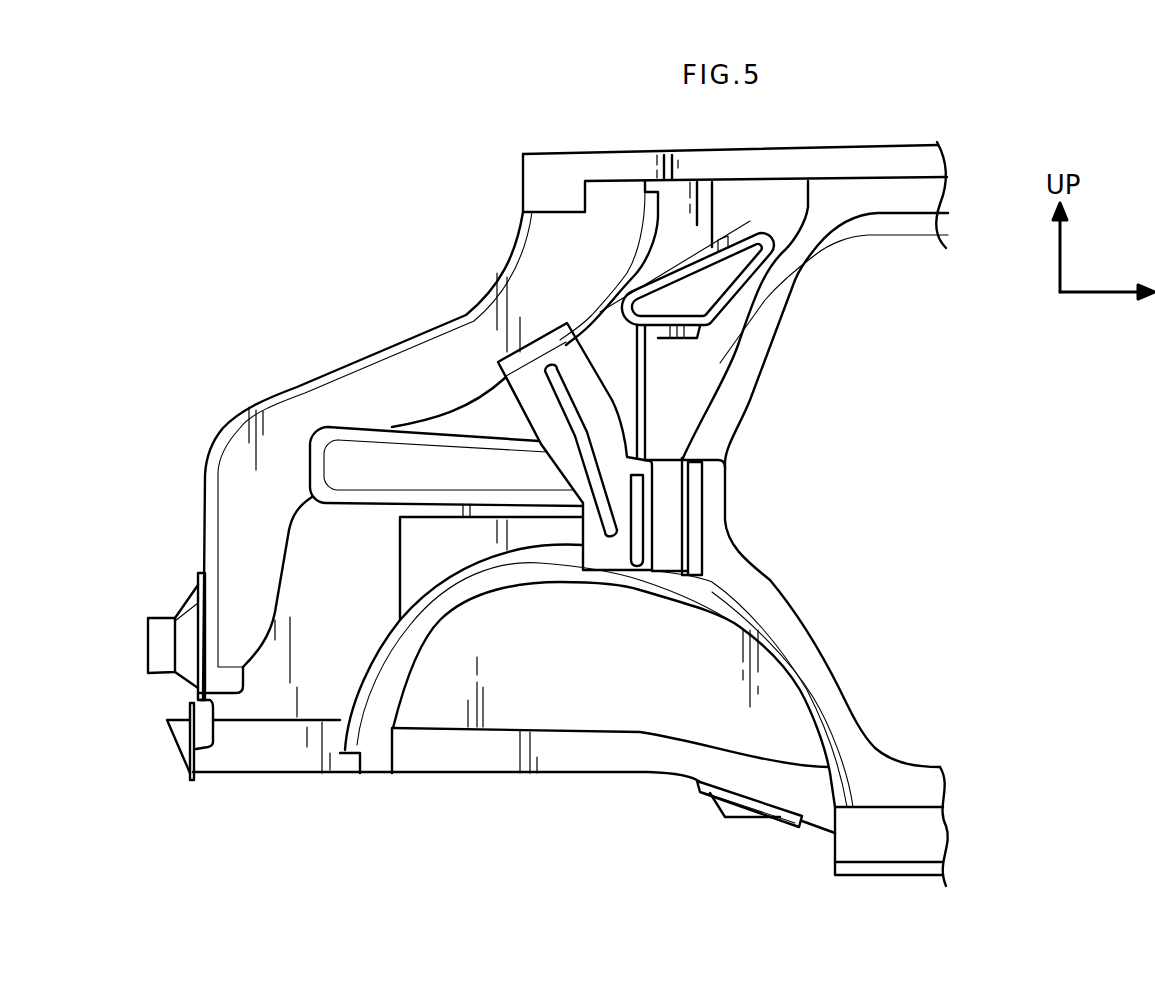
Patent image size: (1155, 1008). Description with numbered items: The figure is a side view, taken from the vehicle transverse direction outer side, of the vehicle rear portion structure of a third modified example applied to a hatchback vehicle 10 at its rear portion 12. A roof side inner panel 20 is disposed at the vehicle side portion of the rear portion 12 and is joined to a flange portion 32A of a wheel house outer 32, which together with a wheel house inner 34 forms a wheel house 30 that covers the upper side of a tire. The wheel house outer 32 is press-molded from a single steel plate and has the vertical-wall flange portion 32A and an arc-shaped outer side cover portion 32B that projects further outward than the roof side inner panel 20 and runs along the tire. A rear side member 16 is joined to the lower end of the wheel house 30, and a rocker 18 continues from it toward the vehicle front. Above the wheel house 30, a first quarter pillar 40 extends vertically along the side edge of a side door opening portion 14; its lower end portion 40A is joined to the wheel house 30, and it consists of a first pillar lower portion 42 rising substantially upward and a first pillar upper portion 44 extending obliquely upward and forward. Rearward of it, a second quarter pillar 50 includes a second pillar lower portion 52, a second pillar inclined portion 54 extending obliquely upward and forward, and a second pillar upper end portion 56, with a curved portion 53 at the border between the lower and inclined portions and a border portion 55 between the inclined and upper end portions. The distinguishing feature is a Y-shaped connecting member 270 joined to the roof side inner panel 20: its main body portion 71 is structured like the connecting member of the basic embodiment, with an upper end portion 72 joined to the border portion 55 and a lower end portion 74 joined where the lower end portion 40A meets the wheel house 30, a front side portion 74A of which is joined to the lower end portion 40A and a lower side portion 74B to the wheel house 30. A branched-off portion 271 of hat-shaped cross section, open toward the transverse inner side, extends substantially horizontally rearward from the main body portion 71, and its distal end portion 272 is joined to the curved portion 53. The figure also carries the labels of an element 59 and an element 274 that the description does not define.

The vehicle 10 is at (1015, 105).
The rear portion 12 is at (838, 130).
The side door opening portion 14 is at (903, 333).
The rear side member 16 is at (503, 772).
The rocker 18 is at (930, 838).
The roof side inner panel 20 is at (477, 413).
The wheel house 30 is at (601, 646).
The wheel house outer 32 is at (494, 590).
The flange portion 32A is at (400, 597).
The outer side cover portion 32B is at (449, 622).
The wheel house inner 34 is at (573, 730).
The first quarter pillar 40 is at (617, 408).
The lower end portion 40A is at (668, 546).
The first pillar lower portion 42 is at (670, 435).
The first pillar upper portion 44 is at (777, 283).
The second quarter pillar 50 is at (287, 383).
The second pillar lower portion 52 is at (230, 503).
The curved portion 53 is at (230, 447).
The second pillar inclined portion 54 is at (430, 357).
The border portion 55 is at (493, 335).
The second pillar upper end portion 56 is at (530, 232).
The bead portion 59 is at (283, 417).
The main body portion 71 is at (628, 460).
The upper end portion 72 is at (545, 335).
The lower end portion 74 is at (712, 590).
The side portion at the vehicle front side 74A is at (660, 517).
The side portion at the vehicle lower side 74B is at (625, 612).
The connecting member 270 is at (677, 398).
The branched-off portion 271 is at (350, 498).
The distal end portion 272 is at (323, 470).
The joint portion 274 is at (555, 476).